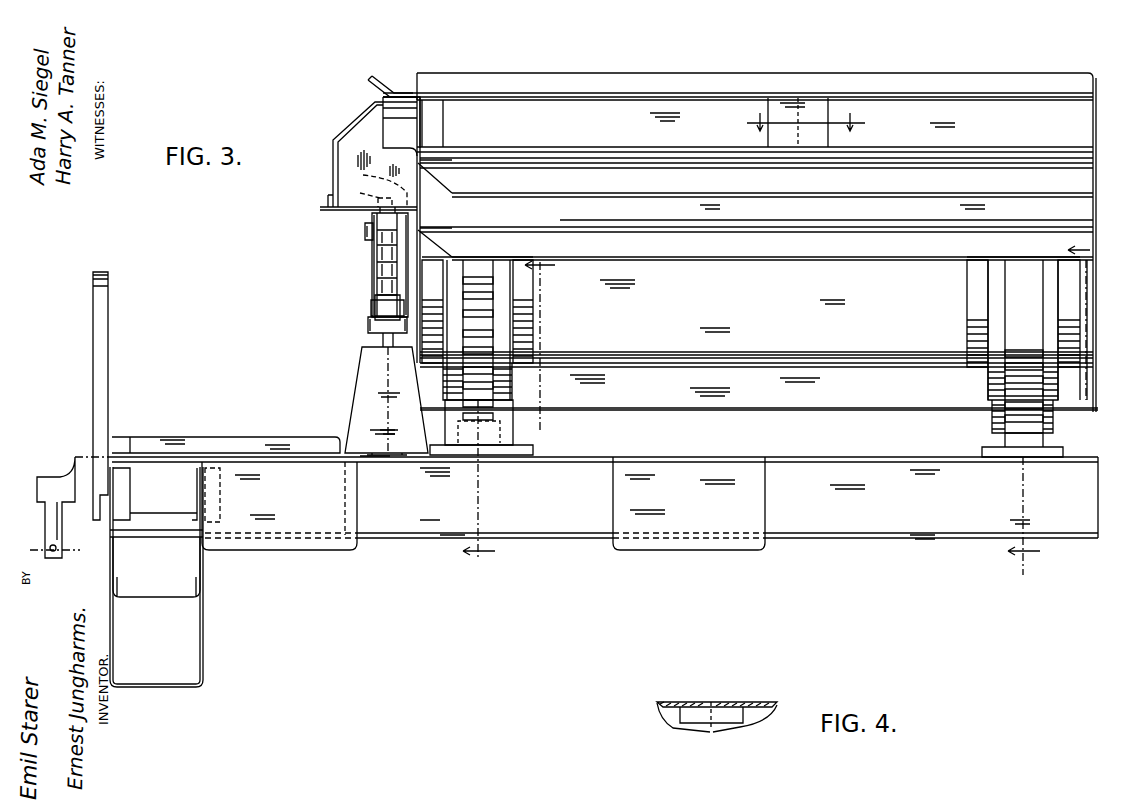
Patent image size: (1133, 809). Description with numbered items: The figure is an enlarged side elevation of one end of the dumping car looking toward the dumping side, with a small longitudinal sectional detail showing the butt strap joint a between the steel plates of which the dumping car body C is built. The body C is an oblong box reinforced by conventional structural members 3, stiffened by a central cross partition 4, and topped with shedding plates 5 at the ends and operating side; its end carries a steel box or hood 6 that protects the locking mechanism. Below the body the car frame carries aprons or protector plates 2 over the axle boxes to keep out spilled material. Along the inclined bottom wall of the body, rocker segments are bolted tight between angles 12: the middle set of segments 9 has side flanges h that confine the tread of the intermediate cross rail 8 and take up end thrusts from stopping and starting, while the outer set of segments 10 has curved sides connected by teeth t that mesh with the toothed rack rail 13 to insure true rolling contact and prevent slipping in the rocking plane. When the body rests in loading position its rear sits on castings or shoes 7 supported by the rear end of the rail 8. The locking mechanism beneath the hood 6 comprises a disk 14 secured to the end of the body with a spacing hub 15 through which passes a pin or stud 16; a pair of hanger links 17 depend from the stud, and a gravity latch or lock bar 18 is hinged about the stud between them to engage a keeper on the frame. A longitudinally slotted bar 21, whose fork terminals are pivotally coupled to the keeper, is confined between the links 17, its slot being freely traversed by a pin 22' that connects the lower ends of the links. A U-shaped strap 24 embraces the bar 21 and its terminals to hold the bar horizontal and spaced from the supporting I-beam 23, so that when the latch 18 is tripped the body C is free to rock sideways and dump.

In FIG. 3, the aprons or protector plates 2 is at (318, 553).
In FIG. 3, the structural members 3 is at (856, 409).
In FIG. 3, the central cross partition 4 is at (803, 126).
In FIG. 3, the shedding plates 5 is at (379, 77).
In FIG. 3, the steel boxes or hoods 6 is at (345, 159).
In FIG. 3, the castings or shoes 7 is at (1049, 412).
In FIG. 3, the rocker supporting cross rails 8 is at (1030, 440).
In FIG. 3, the rocker segments 9 is at (1018, 332).
In FIG. 3, the rocker segments 10 is at (499, 338).
In FIG. 3, the angles 12 is at (975, 276).
In FIG. 3, the toothed or rack rails 13 is at (503, 437).
In FIG. 3, the disk 14 is at (378, 167).
In FIG. 3, the spacing hub 15 is at (421, 231).
In FIG. 3, the pin or stud 16 is at (365, 231).
In FIG. 3, the hanger links 17 is at (372, 249).
In FIG. 3, the gravity latch or lock bar 18 is at (380, 271).
In FIG. 3, the longitudinally slotted bar 21 is at (375, 296).
In FIG. 3, the pin 22' is at (367, 305).
In FIG. 3, the structural member or I-beam 23 is at (383, 341).
In FIG. 3, the U-shaped strap 24 is at (372, 321).
In FIG. 3, the butt strap joints a is at (818, 108).
In FIG. 4, the butt strap joints a is at (738, 712).
In FIG. 3, the dumping car body C is at (1003, 113).
In FIG. 4, the dumping car body C is at (770, 702).
In FIG. 3, the side flanges h is at (997, 298).
In FIG. 3, the teeth t is at (478, 352).